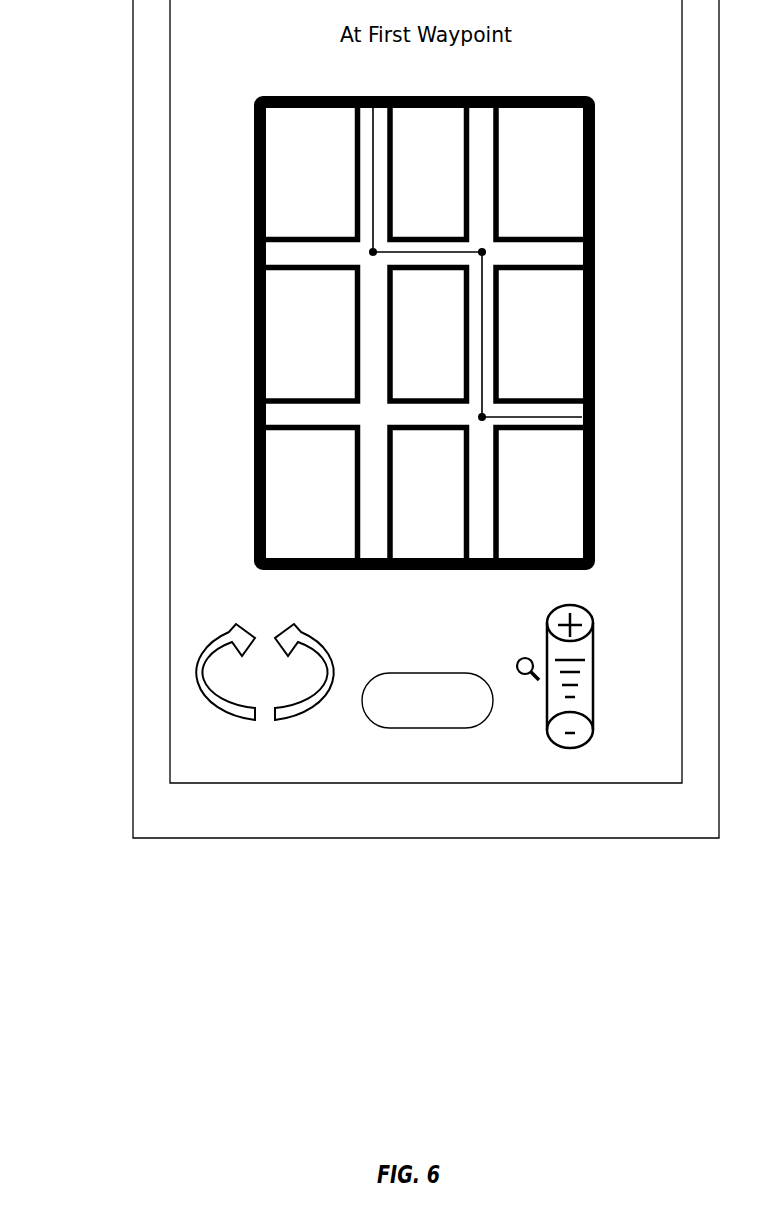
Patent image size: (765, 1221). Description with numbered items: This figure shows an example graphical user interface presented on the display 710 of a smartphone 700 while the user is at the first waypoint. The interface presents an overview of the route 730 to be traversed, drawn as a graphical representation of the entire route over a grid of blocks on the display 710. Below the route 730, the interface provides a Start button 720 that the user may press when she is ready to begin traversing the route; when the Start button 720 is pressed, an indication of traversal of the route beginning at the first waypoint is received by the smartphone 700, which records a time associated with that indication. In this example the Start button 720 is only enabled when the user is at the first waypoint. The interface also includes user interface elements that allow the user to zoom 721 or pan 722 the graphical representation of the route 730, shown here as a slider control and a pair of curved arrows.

The smartphone 700 is at (132, 392).
The display 710 is at (445, 631).
The Start button 720 is at (427, 728).
The zoom user interface element 721 is at (613, 697).
The pan user interface element 722 is at (212, 613).
The route 730 is at (255, 332).